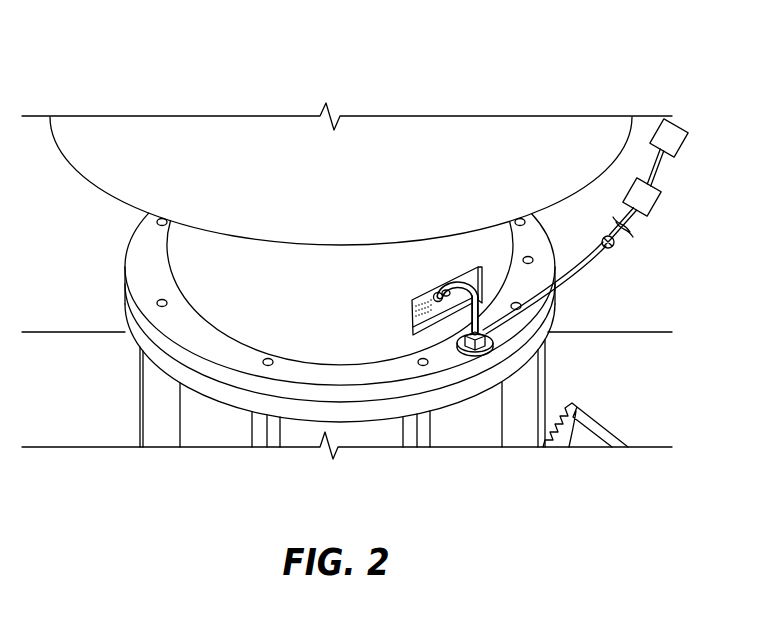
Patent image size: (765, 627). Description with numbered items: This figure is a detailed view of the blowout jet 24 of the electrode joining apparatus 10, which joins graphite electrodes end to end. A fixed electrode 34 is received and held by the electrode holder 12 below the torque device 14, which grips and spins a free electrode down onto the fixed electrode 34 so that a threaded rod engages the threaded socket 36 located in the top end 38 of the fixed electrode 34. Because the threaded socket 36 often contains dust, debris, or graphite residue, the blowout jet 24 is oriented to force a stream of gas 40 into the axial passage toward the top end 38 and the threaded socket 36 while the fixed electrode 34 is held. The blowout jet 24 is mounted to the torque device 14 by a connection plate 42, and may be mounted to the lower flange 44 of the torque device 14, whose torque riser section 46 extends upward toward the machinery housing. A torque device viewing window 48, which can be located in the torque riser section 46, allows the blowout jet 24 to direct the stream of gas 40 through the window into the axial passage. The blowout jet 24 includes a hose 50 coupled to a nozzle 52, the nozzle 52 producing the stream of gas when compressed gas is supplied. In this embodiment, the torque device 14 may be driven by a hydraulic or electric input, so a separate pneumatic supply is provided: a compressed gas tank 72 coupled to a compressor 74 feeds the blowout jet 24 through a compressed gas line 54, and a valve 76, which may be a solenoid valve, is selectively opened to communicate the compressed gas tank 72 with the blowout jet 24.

The electrode joining apparatus 10 is at (599, 63).
The electrode holder 12 is at (148, 394).
The torque device 14 is at (98, 168).
The blowout jet 24 is at (509, 222).
The fixed electrode 34 is at (472, 284).
The threaded socket 36 is at (440, 292).
The top end 38 is at (492, 280).
The stream of gas 40 is at (413, 299).
The connection plate 42 is at (505, 334).
The lower flange 44 is at (137, 268).
The torque riser section 46 is at (190, 253).
The torque device viewing window 48 is at (411, 328).
The hose 50 is at (473, 336).
The nozzle 52 is at (433, 292).
The compressed gas line 54 is at (578, 272).
The compressed gas tank 72 is at (653, 206).
The compressor 74 is at (680, 144).
The valve 76 is at (614, 247).